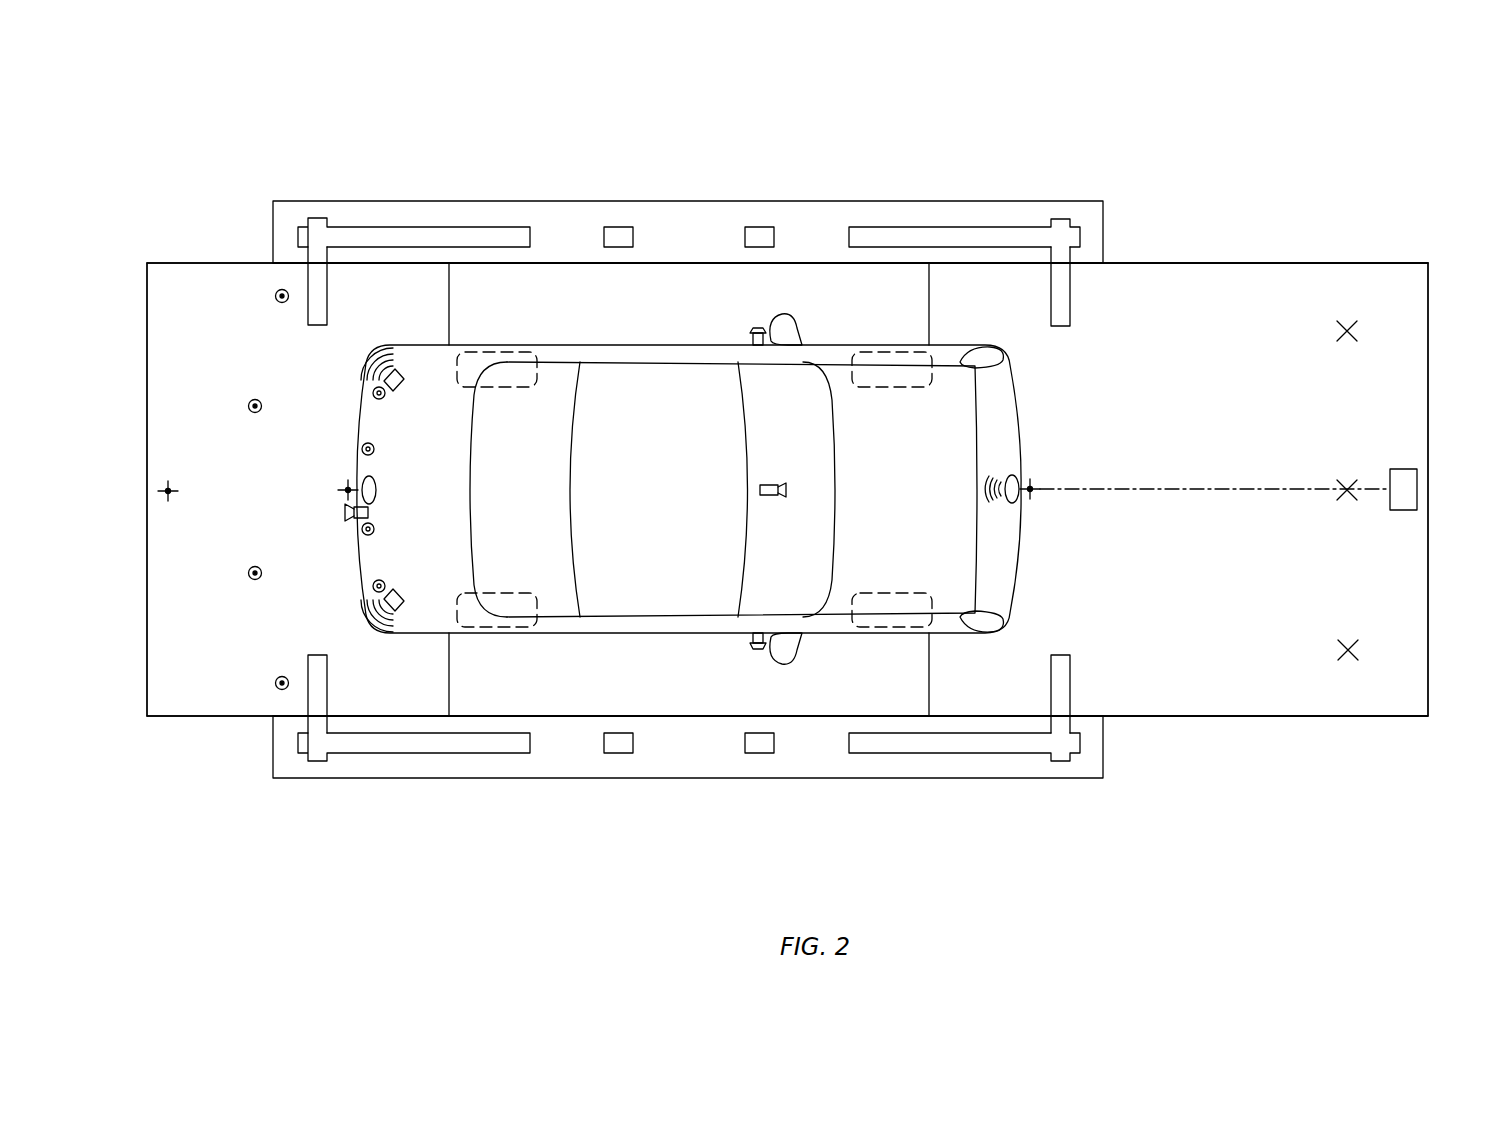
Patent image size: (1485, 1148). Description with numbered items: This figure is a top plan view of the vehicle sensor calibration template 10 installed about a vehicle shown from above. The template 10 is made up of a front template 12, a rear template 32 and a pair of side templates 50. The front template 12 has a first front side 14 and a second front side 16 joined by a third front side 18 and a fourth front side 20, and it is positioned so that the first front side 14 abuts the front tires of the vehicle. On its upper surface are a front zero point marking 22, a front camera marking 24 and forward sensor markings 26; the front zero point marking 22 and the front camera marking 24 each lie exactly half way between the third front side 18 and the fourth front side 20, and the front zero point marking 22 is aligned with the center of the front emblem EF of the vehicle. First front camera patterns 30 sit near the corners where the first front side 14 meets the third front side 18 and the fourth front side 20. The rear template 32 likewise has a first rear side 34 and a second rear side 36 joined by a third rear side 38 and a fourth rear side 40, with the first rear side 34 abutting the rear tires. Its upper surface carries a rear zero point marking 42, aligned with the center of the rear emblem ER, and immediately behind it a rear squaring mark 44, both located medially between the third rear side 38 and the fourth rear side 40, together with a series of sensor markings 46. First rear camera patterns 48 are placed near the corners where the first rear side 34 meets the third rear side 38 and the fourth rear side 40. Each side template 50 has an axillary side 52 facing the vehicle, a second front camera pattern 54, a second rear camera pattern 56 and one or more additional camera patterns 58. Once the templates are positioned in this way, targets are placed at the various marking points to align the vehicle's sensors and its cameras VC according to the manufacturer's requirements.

The vehicle sensor calibration template 10 is at (1296, 110).
The front template 12 is at (1242, 285).
The first front side 14 is at (929, 328).
The second front side 16 is at (1418, 490).
The third front side 18 is at (1363, 717).
The fourth front side 20 is at (1332, 262).
The front zero point marking 22 is at (1034, 489).
The front camera marking 24 is at (1347, 480).
The forward sensor markings 26 is at (1347, 322).
The first front camera patterns 30 is at (1062, 273).
The rear template 32 is at (178, 333).
The first rear side 34 is at (449, 330).
The second rear side 36 is at (147, 560).
The third rear side 38 is at (210, 717).
The fourth rear side 40 is at (193, 263).
The rear zero point marking 42 is at (345, 490).
The rear squaring mark 44 is at (165, 489).
The sensor markings 46 is at (276, 293).
The first rear camera patterns 48 is at (317, 270).
The side templates 50 is at (810, 198).
The axillary side 52 is at (692, 266).
The second front camera pattern 54 is at (1062, 259).
The second rear camera pattern 56 is at (317, 250).
The additional camera patterns 58 is at (623, 234).
The rear emblem ER is at (372, 484).
The front emblem EF is at (1020, 480).
The cameras VC is at (776, 485).